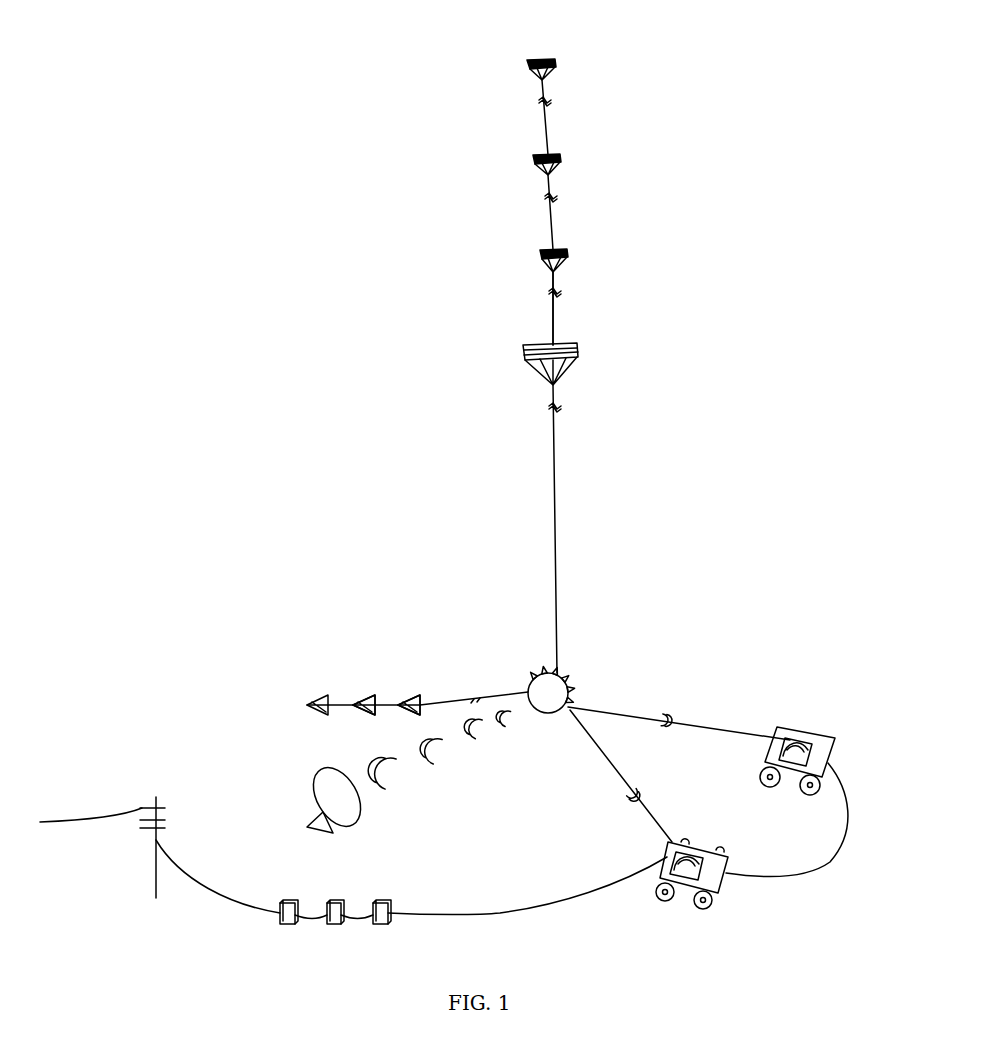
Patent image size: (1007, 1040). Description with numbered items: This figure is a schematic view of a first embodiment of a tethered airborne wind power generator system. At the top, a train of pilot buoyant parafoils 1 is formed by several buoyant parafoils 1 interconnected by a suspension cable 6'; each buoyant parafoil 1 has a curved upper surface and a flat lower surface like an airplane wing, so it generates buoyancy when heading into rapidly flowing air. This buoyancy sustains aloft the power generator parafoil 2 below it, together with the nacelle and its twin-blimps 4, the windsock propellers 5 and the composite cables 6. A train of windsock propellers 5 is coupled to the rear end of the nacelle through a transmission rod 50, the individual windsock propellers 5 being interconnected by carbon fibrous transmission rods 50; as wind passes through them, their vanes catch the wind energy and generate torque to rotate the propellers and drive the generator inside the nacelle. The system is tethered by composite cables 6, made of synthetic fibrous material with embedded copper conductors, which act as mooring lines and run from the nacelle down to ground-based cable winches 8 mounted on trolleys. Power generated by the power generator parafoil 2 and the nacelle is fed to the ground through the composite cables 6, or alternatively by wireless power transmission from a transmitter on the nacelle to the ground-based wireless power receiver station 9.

The pilot buoyant parafoil 1 is at (565, 55).
The power generator parafoil 2 is at (533, 342).
The twin-blimps 4 is at (568, 683).
The windsock propeller 5 is at (368, 692).
The transmission rod 50 is at (388, 703).
The composite cable 6 is at (655, 613).
The suspension cable 6' is at (501, 254).
The cable winch 8 is at (818, 738).
The ground-based wireless power receiver station 9 is at (307, 767).